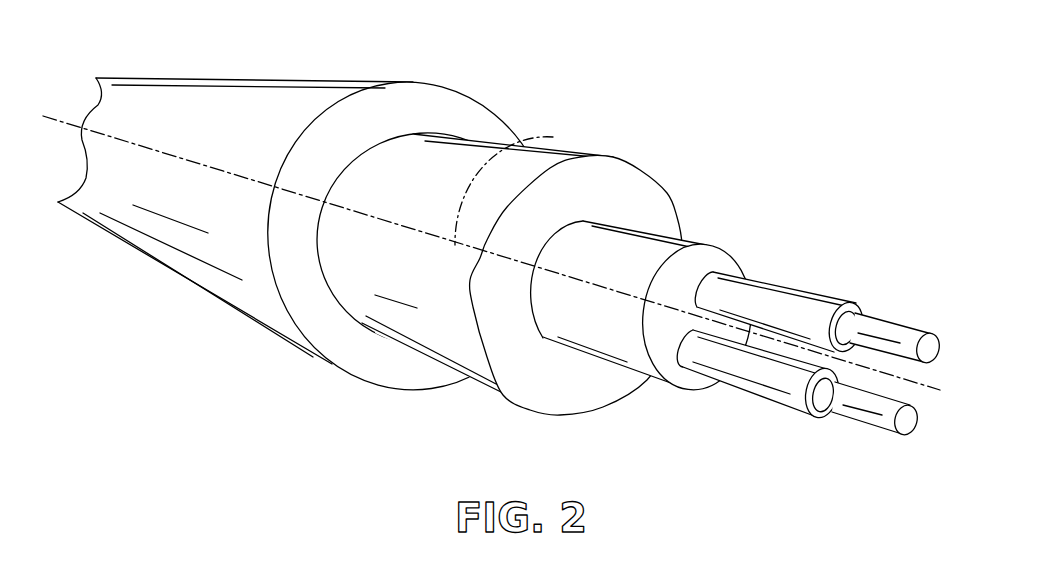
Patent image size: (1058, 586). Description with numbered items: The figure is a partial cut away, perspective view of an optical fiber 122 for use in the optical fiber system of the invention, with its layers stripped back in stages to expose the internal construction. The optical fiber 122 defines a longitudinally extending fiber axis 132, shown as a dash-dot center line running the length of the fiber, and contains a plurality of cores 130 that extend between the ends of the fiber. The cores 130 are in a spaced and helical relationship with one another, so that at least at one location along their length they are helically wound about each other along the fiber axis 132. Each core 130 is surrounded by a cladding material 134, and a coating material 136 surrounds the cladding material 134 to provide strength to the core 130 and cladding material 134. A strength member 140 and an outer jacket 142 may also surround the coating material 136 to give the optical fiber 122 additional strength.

The optical fiber 122 is at (358, 366).
The outer jacket 142 is at (467, 117).
The strength member 140 is at (620, 192).
The coating material 136 is at (660, 247).
The cladding material 134 is at (797, 297).
The cores 130 is at (890, 330).
The fiber axis 132 is at (551, 138).